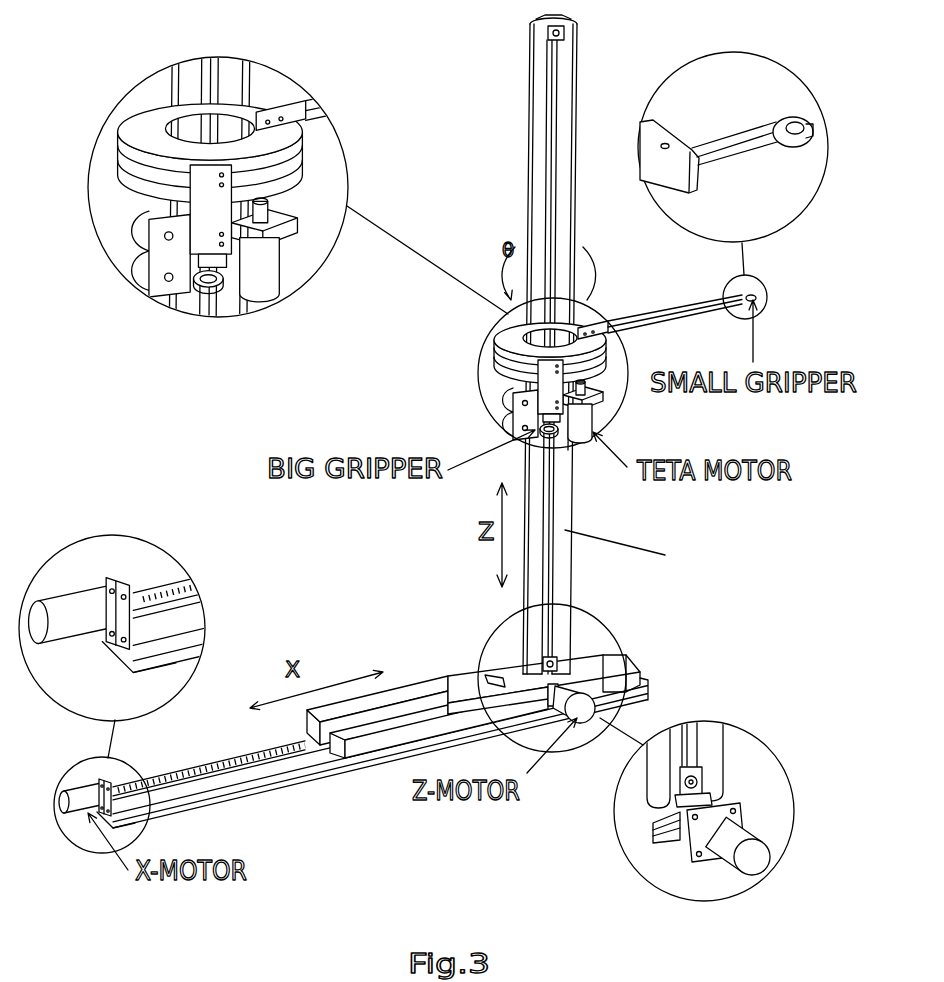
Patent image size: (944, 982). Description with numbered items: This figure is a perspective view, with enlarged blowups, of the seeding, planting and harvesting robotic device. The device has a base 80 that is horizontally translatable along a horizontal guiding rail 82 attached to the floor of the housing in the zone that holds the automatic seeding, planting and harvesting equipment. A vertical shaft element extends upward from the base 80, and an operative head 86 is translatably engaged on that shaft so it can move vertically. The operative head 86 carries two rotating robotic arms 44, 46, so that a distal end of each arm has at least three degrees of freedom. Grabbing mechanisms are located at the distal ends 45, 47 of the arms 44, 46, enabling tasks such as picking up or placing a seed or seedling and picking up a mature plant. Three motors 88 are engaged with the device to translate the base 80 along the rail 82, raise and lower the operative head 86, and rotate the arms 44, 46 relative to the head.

The rotating robotic arm 44 is at (677, 312).
The distal end of robotic arm 45 is at (766, 302).
The rotating robotic arm 46 is at (197, 238).
The distal end of robotic arm 47 is at (223, 280).
The base 80 is at (370, 755).
The horizontal guiding rail 82 is at (216, 804).
The operative head 86 is at (603, 375).
The motor 88 is at (258, 268).